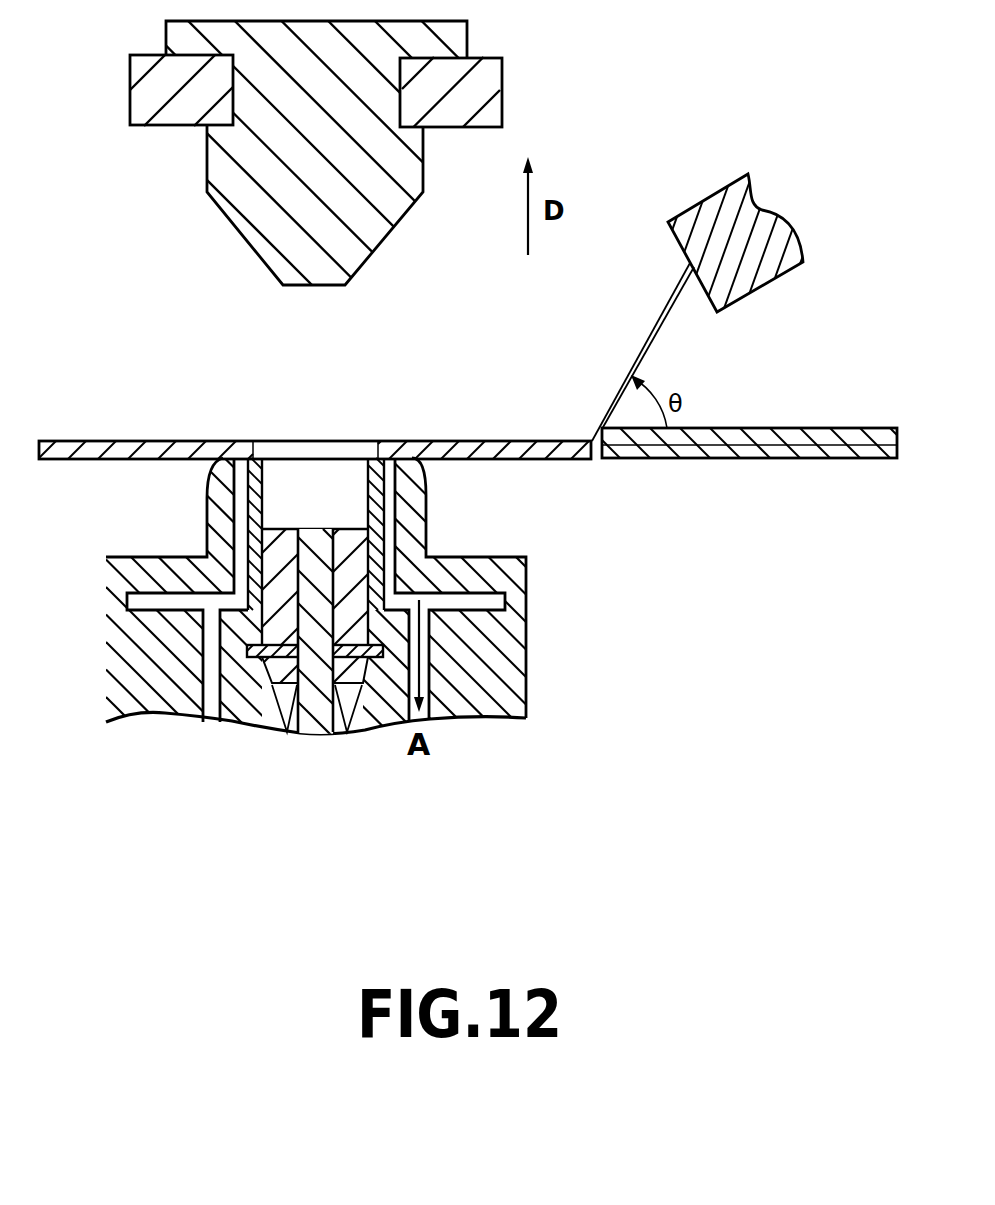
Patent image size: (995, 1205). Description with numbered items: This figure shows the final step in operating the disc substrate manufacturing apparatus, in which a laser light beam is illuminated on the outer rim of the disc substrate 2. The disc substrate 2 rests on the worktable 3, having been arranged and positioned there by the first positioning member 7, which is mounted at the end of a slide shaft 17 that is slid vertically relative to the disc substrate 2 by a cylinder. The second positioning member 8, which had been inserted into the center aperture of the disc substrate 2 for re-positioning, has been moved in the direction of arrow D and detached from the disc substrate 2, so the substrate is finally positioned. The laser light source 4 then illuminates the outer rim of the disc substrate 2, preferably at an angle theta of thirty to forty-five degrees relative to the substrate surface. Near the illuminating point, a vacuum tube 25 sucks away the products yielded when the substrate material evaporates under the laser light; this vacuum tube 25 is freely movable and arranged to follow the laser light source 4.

The second positioning member 8 is at (455, 37).
The laser light source 4 is at (768, 227).
The disc substrate 2 is at (517, 441).
The vacuum tube 25 is at (768, 460).
The worktable 3 is at (417, 538).
The first positioning member 7 is at (353, 521).
The slide shaft 17 is at (312, 723).